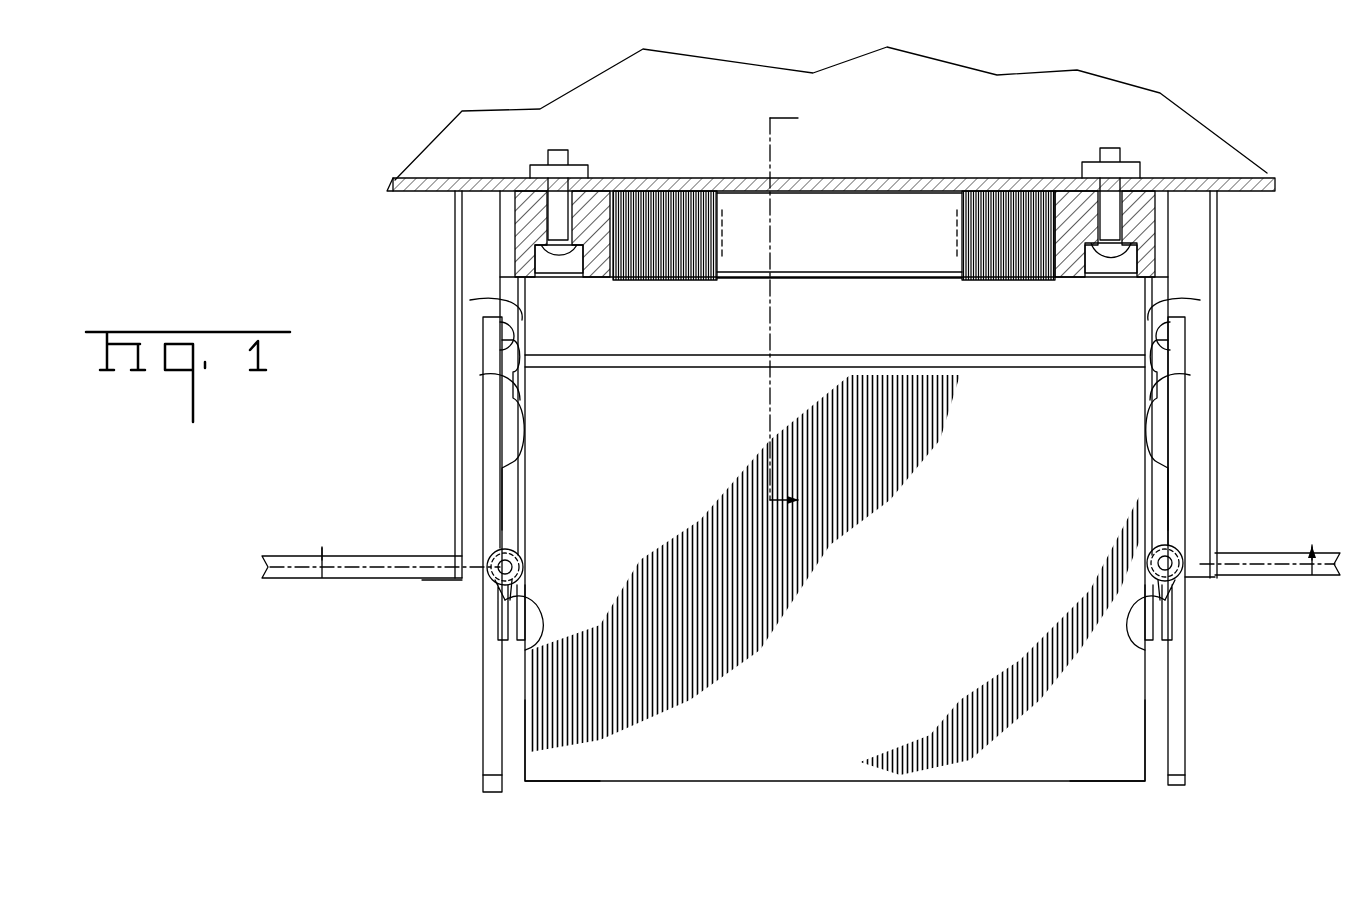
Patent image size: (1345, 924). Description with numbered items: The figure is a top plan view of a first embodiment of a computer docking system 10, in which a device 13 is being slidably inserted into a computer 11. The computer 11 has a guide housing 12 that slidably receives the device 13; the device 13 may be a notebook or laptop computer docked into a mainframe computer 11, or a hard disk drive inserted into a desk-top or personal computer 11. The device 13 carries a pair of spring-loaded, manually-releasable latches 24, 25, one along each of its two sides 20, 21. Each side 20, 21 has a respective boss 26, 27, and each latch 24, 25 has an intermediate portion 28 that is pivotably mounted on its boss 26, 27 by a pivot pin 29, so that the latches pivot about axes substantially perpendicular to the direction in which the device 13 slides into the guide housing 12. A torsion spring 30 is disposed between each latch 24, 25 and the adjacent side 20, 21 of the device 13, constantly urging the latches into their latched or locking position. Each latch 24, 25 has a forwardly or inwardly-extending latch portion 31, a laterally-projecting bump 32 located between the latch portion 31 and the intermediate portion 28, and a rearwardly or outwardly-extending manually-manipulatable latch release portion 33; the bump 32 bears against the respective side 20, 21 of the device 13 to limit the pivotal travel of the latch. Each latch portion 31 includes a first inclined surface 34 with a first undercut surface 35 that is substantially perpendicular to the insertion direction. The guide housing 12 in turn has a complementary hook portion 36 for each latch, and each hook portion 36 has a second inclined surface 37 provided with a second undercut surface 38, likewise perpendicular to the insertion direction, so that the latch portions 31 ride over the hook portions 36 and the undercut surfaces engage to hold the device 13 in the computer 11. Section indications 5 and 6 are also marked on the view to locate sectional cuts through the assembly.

The computer docking system 10 is at (378, 128).
The computer 11 is at (440, 157).
The guide housing 12 is at (452, 481).
The device 13 is at (826, 770).
The side 20 is at (518, 772).
The side 21 is at (1147, 772).
The latch 24 is at (487, 505).
The latch 25 is at (1183, 482).
The boss 26 is at (503, 585).
The boss 27 is at (1182, 580).
The intermediate portion 28 is at (500, 551).
The pivot pin 29 is at (520, 645).
The torsion spring 30 is at (500, 700).
The latch portion 31 is at (515, 345).
The bump 32 is at (520, 438).
The latch release portion 33 is at (498, 778).
The first inclined surface 34 is at (520, 322).
The first undercut surface 35 is at (522, 398).
The hook portion 36 is at (525, 226).
The second inclined surface 37 is at (520, 266).
The second undercut surface 38 is at (525, 242).
The section line 5- 5 is at (801, 539).
The section line 6- 6 is at (797, 309).